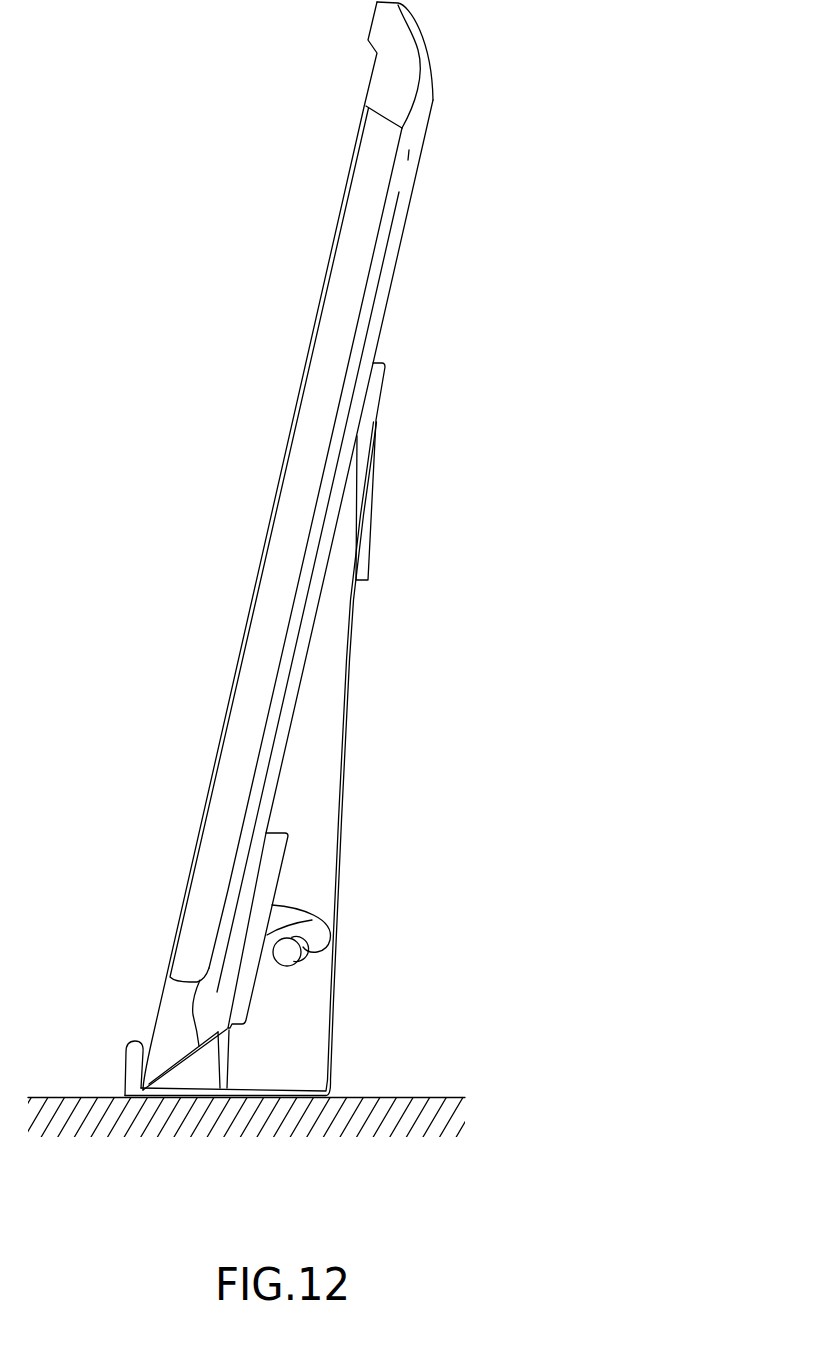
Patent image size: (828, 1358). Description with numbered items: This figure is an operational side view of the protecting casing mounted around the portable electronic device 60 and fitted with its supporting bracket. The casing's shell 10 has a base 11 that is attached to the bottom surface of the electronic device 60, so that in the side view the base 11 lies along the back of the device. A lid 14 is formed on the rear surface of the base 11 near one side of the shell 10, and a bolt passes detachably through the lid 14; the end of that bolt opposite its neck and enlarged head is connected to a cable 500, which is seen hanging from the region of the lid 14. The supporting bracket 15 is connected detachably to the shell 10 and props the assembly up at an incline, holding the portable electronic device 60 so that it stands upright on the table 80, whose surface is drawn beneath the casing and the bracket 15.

The shell 10 is at (456, 86).
The base 11 is at (383, 258).
The lid 14 is at (278, 852).
The supporting bracket 15 is at (353, 660).
The electronic device 60 is at (335, 265).
The table 80 is at (443, 1106).
The cable 500 is at (302, 940).